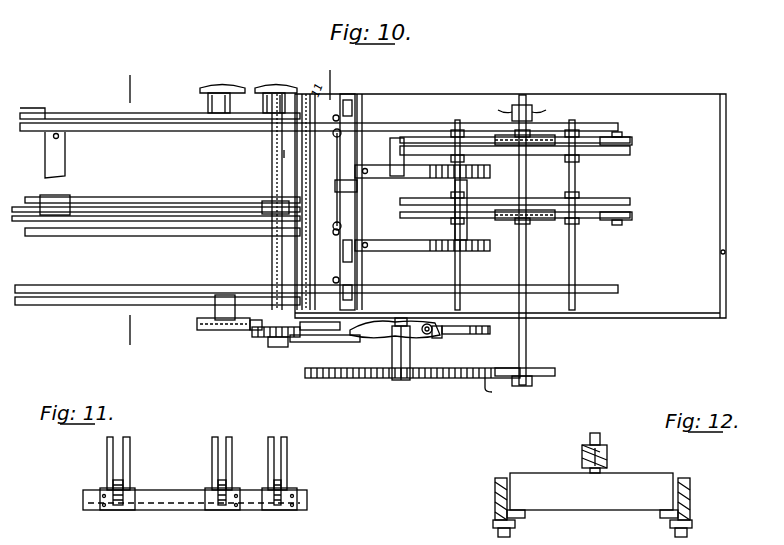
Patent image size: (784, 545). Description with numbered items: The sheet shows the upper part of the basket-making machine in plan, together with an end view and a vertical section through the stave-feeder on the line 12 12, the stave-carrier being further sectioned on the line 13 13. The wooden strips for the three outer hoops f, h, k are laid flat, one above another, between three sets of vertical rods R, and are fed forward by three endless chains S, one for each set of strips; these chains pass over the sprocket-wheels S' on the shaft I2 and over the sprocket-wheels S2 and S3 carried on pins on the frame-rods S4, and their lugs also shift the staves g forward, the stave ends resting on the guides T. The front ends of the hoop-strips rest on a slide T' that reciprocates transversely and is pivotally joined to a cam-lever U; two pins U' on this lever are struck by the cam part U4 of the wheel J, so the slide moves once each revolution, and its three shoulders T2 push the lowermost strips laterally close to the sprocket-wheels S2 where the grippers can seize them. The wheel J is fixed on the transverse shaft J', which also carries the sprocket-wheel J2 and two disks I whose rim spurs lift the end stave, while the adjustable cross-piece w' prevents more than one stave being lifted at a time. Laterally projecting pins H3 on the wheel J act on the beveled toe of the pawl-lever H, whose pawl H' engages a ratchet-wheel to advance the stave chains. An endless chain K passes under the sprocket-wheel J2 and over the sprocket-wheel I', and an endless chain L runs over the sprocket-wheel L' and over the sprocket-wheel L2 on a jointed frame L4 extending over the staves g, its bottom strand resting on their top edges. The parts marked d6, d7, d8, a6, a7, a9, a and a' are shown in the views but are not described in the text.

In FIG. 10, the vertical rods R is at (55, 115).
In FIG. 11, the vertical rods R is at (197, 450).
In FIG. 10, the section line 12 12 is at (118, 210).
In FIG. 10, the guides T is at (324, 203).
In FIG. 10, the post d6 is at (226, 88).
In FIG. 10, the post d7 is at (290, 88).
In FIG. 10, the guide d8 is at (247, 155).
In FIG. 10, the section line 13 13 is at (294, 159).
In FIG. 10, the shoulders T2 is at (353, 108).
In FIG. 11, the shoulders T2 is at (103, 510).
In FIG. 10, the slide T' is at (346, 172).
In FIG. 11, the slide T' is at (208, 496).
In FIG. 10, the adjustable cross-piece w' is at (329, 179).
In FIG. 10, the jointed frame L4 is at (120, 197).
In FIG. 12, the jointed frame L4 is at (610, 452).
In FIG. 10, the sprocket-wheel L2 is at (68, 205).
In FIG. 10, the sprocket-wheel L' is at (156, 198).
In FIG. 10, the endless chain L is at (162, 235).
In FIG. 12, the endless chain L is at (605, 437).
In FIG. 10, the endless chains S is at (515, 205).
In FIG. 10, the frame-rods S4 is at (590, 253).
In FIG. 10, the sprocket-wheels S' is at (515, 185).
In FIG. 10, the sprocket-wheels S3 is at (634, 140).
In FIG. 10, the sprocket-wheels S2 is at (421, 206).
In FIG. 10, the disks I is at (427, 208).
In FIG. 10, the shaft I2 is at (527, 338).
In FIG. 10, the transverse shaft J' is at (415, 292).
In FIG. 10, the gear a6 is at (210, 315).
In FIG. 10, the collar a7 is at (248, 328).
In FIG. 10, the pinion a9 is at (258, 338).
In FIG. 10, the pawl H' is at (325, 348).
In FIG. 10, the pawl-lever H is at (320, 341).
In FIG. 10, the cam part U4 is at (388, 322).
In FIG. 10, the pins U' is at (402, 325).
In FIG. 10, the cam-lever U is at (410, 353).
In FIG. 10, the pins H3 is at (445, 336).
In FIG. 10, the wheel J is at (470, 335).
In FIG. 10, the sprocket-wheel J2 is at (370, 378).
In FIG. 10, the sprocket-wheel I' is at (527, 384).
In FIG. 10, the endless chain K is at (481, 389).
In FIG. 11, the outer hoop strip f is at (113, 482).
In FIG. 11, the outer hoop strip h is at (220, 482).
In FIG. 11, the outer hoop strip k is at (283, 482).
In FIG. 12, the staves g is at (591, 491).
In FIG. 12, the side frame a is at (592, 507).
In FIG. 12, the bracket a' is at (592, 524).